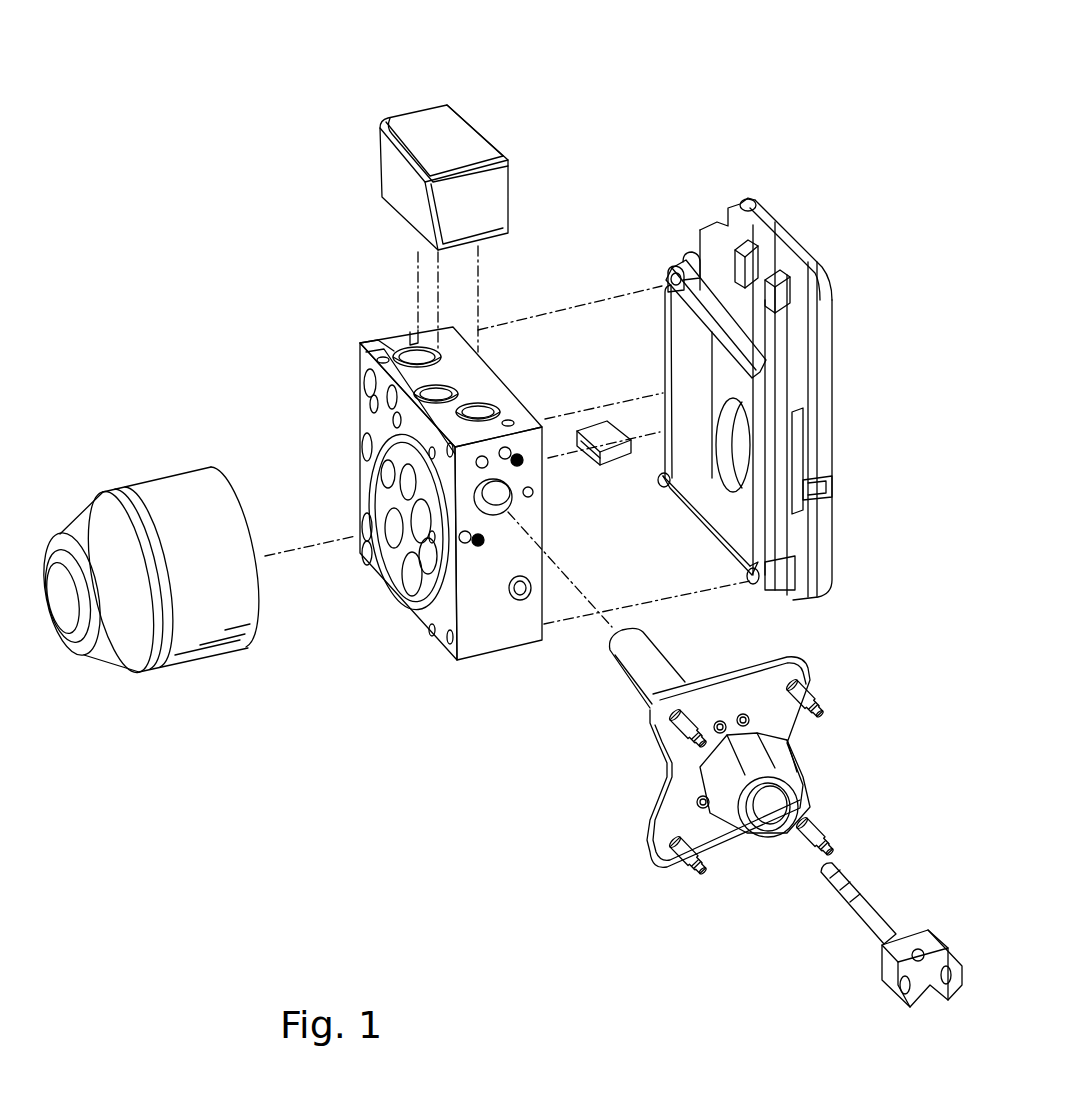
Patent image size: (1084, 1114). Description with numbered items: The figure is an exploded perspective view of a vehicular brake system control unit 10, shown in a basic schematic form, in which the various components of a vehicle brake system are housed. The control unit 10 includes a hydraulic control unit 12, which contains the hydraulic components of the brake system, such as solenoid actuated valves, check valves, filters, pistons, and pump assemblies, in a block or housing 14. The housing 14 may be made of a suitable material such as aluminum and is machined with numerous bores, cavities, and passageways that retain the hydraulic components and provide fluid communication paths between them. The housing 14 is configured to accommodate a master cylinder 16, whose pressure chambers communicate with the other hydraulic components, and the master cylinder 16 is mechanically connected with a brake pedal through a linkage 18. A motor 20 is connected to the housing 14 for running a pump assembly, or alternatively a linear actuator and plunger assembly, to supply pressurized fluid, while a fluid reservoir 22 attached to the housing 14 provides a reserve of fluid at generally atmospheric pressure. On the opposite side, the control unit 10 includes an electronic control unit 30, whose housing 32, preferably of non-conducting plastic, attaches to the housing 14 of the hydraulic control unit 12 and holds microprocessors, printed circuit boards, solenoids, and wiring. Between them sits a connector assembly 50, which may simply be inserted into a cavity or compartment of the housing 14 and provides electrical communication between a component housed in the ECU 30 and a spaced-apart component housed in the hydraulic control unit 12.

The vehicular brake system control unit 10 is at (750, 76).
The hydraulic control unit 12 is at (314, 339).
The housing 14 is at (490, 632).
The master cylinder 16 is at (643, 668).
The linkage 18 is at (870, 928).
The motor 20 is at (158, 474).
The fluid reservoir 22 is at (378, 170).
The electronic control unit 30 is at (847, 338).
The housing 32 is at (820, 440).
The connector assembly 50 is at (603, 433).